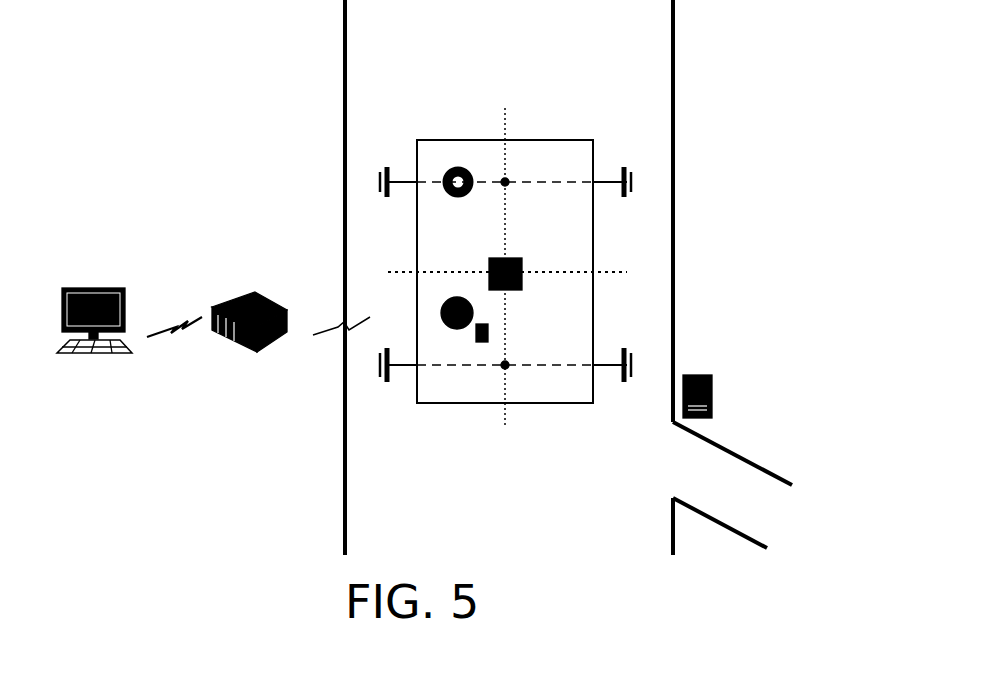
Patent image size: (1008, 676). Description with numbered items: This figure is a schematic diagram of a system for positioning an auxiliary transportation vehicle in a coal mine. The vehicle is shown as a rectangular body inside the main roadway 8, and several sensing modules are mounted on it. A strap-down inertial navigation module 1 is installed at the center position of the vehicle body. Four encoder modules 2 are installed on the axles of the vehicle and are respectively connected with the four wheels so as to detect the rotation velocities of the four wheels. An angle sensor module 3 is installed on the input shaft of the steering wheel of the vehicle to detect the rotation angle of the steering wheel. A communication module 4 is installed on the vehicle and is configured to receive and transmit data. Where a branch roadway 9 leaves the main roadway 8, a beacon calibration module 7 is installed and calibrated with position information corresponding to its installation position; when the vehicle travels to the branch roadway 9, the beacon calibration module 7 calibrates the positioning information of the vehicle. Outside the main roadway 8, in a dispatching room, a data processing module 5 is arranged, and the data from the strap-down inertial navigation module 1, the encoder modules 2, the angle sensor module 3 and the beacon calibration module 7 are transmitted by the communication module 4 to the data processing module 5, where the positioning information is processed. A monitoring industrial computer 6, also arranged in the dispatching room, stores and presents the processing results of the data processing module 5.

The strap-down inertial navigation module 1 is at (580, 242).
The encoder modules 2 is at (378, 355).
The angle sensor module 3 is at (477, 127).
The communication module 4 is at (457, 313).
The data processing module 5 is at (231, 236).
The monitoring industrial computer 6 is at (81, 232).
The beacon calibration module 7 is at (727, 331).
The main roadway 8 is at (732, 242).
The branch roadway 9 is at (731, 430).